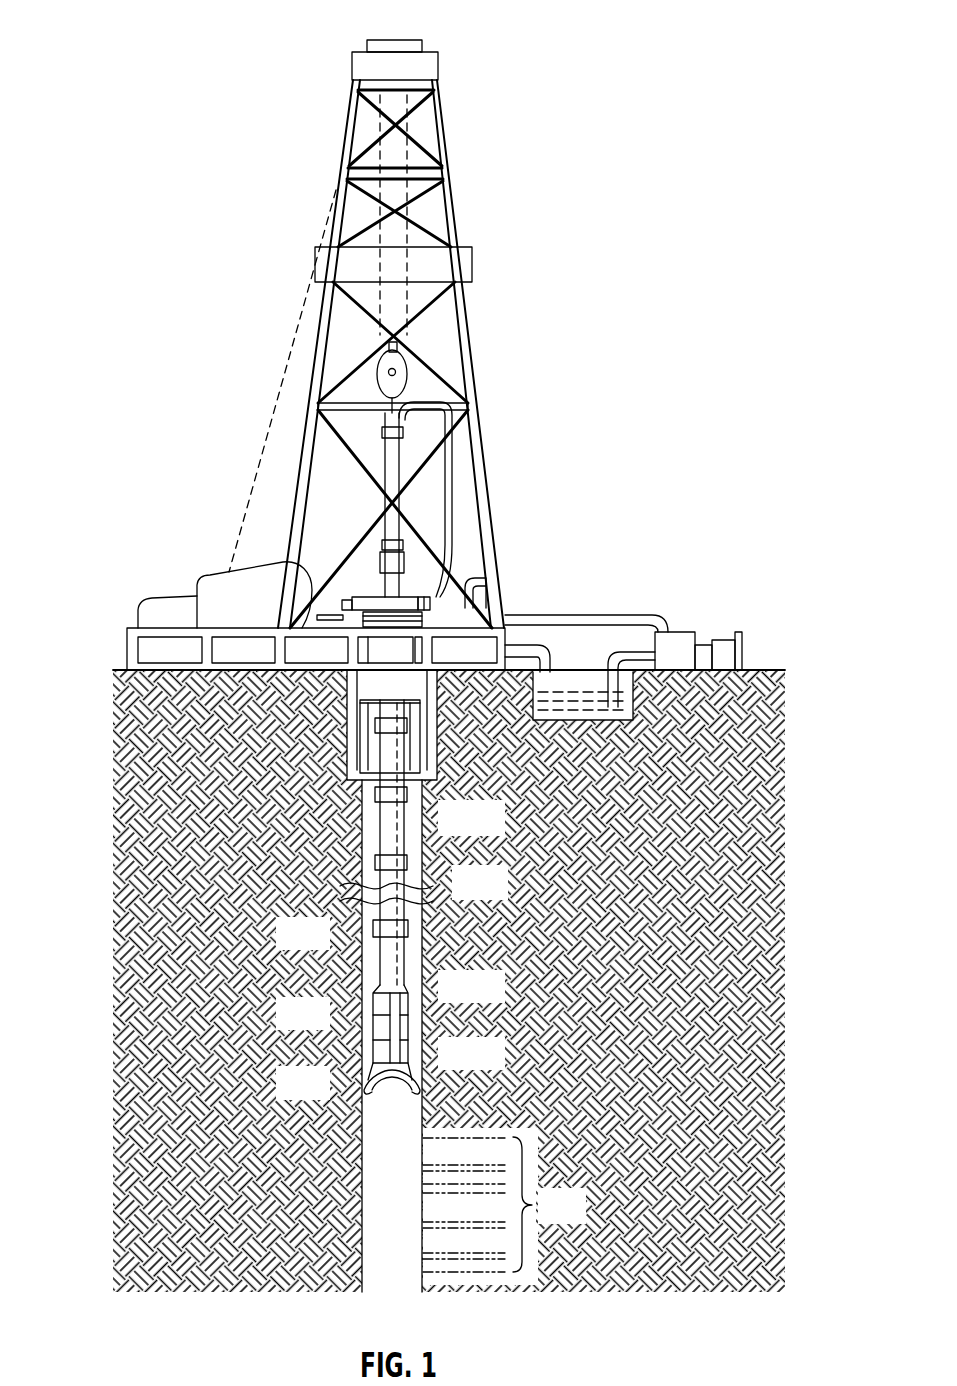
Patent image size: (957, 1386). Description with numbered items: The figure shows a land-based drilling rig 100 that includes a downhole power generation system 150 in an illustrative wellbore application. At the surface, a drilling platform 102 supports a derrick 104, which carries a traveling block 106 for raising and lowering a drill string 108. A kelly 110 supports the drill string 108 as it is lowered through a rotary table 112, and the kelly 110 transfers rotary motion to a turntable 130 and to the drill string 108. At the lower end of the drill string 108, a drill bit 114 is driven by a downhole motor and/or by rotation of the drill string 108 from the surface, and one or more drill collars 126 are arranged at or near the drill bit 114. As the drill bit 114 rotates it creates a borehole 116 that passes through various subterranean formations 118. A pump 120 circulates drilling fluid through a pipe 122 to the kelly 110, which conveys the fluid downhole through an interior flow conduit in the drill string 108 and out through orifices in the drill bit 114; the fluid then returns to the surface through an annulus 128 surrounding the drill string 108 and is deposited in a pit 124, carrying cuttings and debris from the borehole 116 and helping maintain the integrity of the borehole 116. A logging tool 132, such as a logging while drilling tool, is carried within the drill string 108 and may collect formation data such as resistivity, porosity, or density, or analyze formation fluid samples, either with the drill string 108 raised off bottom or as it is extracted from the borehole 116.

The land-based drilling rig 100 is at (181, 35).
The drilling platform 102 is at (127, 632).
The derrick 104 is at (450, 208).
The traveling block 106 is at (402, 373).
The drill string 108 is at (400, 837).
The kelly 110 is at (392, 457).
The rotary table 112 is at (410, 597).
The drill bit 114 is at (407, 1073).
The borehole 116 is at (417, 870).
The subterranean formations 118 is at (501, 1204).
The pump 120 is at (678, 640).
The pipe 122 is at (598, 615).
The pit 124 is at (567, 693).
The drill collars 126 is at (373, 1033).
The annulus 128 is at (367, 952).
The turntable 130 is at (395, 543).
The logging tool 132 is at (380, 1057).
The downhole power generation system 150 is at (397, 1007).